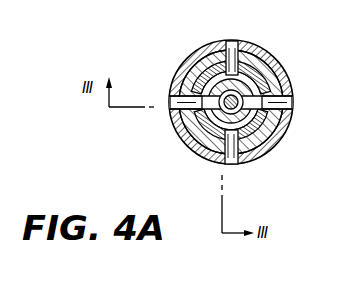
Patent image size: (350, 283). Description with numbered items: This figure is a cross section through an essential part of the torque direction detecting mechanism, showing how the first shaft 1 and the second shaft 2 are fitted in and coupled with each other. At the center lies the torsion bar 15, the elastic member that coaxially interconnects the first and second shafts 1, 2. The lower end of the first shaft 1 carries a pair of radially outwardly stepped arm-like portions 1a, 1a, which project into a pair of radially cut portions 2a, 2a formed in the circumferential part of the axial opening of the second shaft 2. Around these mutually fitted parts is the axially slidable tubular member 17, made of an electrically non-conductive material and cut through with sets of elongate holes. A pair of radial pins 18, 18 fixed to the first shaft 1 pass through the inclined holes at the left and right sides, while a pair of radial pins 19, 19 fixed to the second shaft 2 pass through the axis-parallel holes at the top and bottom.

The first shaft 1 is at (297, 97).
The arm-like portion 1a is at (177, 135).
The second shaft 2 is at (210, 55).
The radially cut portion 2a is at (200, 64).
The torsion bar 15 is at (216, 116).
The tubular member 17 is at (279, 63).
The radial pin 18 is at (168, 102).
The radial pin 19 is at (232, 44).